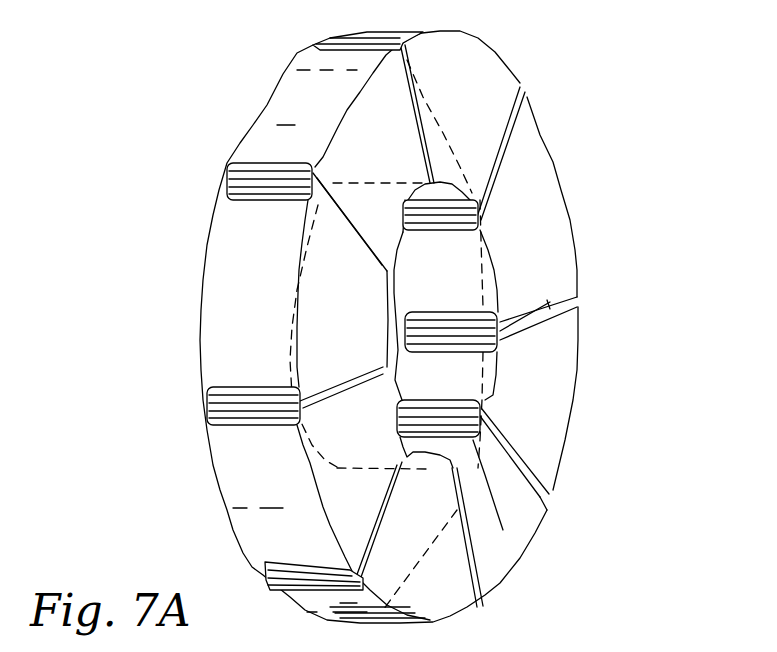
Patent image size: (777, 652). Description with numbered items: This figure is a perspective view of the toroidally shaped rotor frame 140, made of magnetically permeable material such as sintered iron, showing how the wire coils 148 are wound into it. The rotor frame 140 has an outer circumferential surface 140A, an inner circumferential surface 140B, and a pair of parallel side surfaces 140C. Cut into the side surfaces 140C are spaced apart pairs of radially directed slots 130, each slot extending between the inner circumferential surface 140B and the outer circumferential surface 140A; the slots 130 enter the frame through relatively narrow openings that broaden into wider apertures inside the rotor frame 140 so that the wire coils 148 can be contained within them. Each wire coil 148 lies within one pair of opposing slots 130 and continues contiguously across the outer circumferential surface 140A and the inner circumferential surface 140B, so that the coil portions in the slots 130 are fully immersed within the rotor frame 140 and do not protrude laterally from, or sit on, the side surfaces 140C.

The slots 130 is at (377, 320).
The rotor frame 140 is at (435, 327).
The outer circumferential surface 140A is at (261, 331).
The inner circumferential surface 140B is at (537, 291).
The side surfaces 140C is at (557, 432).
The wire coils 148 is at (358, 333).